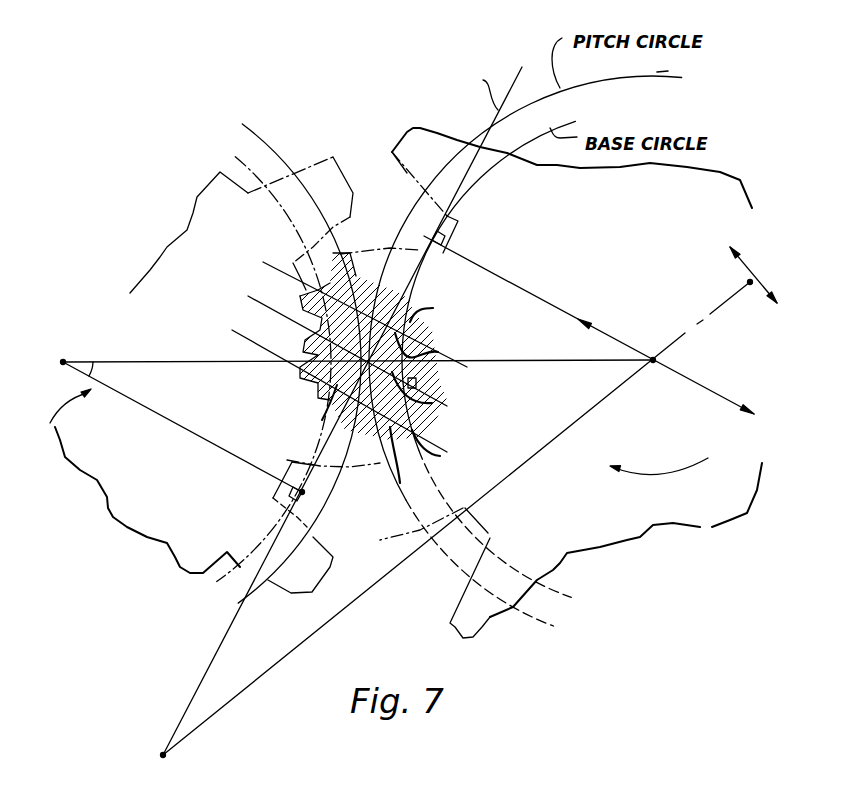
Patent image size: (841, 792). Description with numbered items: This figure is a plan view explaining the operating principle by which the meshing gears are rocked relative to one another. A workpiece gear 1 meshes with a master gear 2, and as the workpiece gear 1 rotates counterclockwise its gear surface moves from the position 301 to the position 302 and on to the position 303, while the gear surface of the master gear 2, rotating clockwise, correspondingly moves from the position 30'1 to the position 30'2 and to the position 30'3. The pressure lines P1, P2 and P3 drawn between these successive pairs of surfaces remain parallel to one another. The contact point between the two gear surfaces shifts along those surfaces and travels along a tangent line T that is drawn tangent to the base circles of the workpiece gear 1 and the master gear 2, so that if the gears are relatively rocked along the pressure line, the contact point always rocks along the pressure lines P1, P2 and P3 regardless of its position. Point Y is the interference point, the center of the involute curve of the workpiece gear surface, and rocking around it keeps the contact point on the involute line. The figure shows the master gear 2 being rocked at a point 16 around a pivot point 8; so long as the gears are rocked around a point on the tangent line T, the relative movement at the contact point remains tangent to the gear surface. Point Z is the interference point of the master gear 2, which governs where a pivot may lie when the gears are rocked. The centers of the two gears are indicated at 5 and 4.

The workpiece gear 1 is at (166, 504).
The master gear 2 is at (552, 511).
The center of second gear 4 is at (589, 325).
The center of first gear 5 is at (354, 413).
The pivot point 8 is at (456, 420).
The rocking point 16 is at (753, 284).
The first position of gear surface of workpiece gear 301 is at (353, 381).
The second position of gear surface of workpiece gear 302 is at (432, 403).
The third position of gear surface of workpiece gear 303 is at (438, 352).
The first position of gear surface of master gear 30'1 is at (456, 452).
The second position of gear surface of master gear 30'2 is at (454, 388).
The third position of gear surface of master gear 30'3 is at (450, 304).
The pressure line P1 is at (325, 386).
The pressure line P2 is at (332, 346).
The pressure line P3 is at (351, 305).
The tangent line T is at (483, 91).
The interference point Y is at (277, 494).
The interference point of master gear Z is at (448, 242).